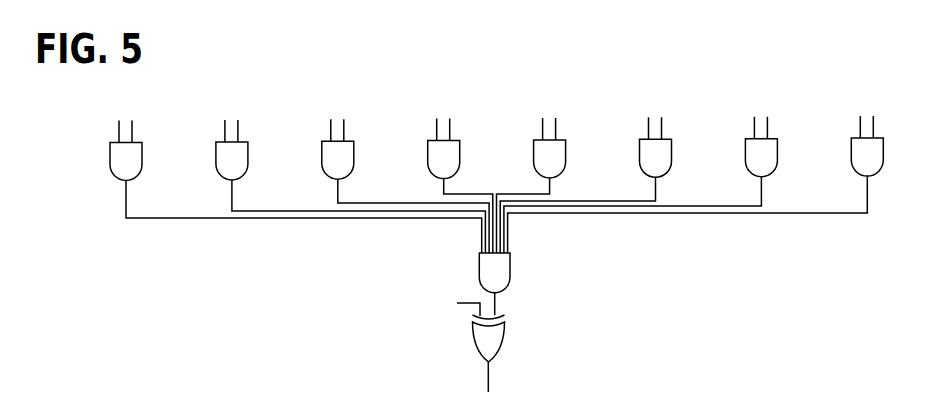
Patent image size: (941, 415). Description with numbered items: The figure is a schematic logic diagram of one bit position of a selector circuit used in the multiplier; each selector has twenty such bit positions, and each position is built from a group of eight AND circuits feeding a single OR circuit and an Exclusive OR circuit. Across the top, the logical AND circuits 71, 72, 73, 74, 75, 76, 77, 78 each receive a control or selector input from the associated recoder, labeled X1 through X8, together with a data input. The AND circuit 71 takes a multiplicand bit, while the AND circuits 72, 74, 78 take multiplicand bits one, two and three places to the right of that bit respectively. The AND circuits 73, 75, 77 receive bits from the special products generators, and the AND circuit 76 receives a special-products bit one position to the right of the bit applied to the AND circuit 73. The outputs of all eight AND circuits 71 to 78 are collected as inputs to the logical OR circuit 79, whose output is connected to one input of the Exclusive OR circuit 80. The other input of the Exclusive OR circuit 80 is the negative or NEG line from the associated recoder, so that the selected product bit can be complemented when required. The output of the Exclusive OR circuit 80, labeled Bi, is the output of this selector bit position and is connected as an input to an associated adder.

The logical AND circuit 71 is at (869, 162).
The logical AND circuit 72 is at (763, 163).
The logical AND circuit 73 is at (658, 163).
The logical AND circuit 74 is at (552, 164).
The logical AND circuit 75 is at (444, 162).
The logical AND circuit 76 is at (340, 165).
The logical AND circuit 77 is at (234, 166).
The logical AND circuit 78 is at (128, 166).
The logical OR circuit 79 is at (497, 276).
The Exclusive OR circuit 80 is at (488, 340).